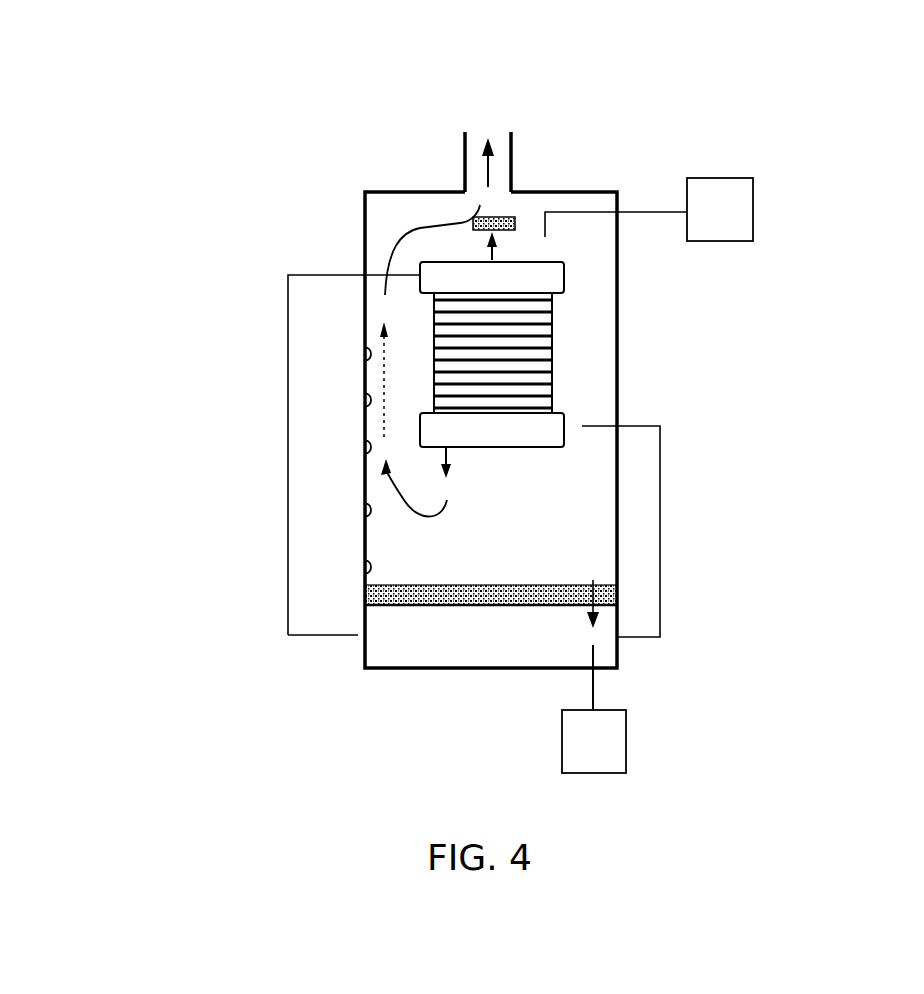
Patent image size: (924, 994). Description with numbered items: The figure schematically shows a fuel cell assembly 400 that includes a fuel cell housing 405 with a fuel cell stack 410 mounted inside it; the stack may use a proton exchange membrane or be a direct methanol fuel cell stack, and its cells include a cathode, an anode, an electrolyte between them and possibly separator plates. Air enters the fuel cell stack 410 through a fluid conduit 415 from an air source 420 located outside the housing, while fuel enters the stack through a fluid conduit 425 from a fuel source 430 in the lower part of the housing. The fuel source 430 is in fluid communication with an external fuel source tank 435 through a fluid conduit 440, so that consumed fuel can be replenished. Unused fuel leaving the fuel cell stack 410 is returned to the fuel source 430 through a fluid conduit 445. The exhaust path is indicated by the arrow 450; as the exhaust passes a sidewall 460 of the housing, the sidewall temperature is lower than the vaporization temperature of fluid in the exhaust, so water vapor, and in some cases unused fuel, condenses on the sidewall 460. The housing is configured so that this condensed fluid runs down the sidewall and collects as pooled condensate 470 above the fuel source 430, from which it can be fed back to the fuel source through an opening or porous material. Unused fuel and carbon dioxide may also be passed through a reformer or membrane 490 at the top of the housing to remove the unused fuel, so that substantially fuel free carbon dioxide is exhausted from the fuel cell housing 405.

The fuel cell assembly 400 is at (404, 130).
The fuel cell housing 405 is at (632, 329).
The fuel cell stack 410 is at (552, 368).
The fluid conduit 415 is at (665, 211).
The air source 420 is at (740, 215).
The fluid conduit 425 is at (657, 510).
The fuel source 430 is at (405, 647).
The fuel source tank 435 is at (613, 748).
The fluid conduit 440 is at (595, 683).
The fluid conduit 445 is at (288, 483).
The arrow 450 is at (448, 455).
The sidewall 460 is at (355, 345).
The pooled condensate 470 is at (357, 595).
The membrane 490 is at (512, 217).